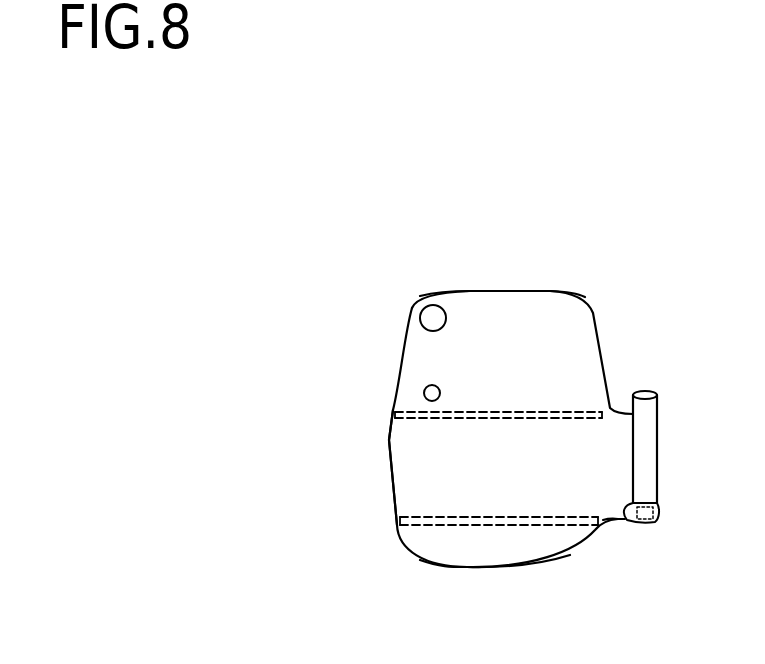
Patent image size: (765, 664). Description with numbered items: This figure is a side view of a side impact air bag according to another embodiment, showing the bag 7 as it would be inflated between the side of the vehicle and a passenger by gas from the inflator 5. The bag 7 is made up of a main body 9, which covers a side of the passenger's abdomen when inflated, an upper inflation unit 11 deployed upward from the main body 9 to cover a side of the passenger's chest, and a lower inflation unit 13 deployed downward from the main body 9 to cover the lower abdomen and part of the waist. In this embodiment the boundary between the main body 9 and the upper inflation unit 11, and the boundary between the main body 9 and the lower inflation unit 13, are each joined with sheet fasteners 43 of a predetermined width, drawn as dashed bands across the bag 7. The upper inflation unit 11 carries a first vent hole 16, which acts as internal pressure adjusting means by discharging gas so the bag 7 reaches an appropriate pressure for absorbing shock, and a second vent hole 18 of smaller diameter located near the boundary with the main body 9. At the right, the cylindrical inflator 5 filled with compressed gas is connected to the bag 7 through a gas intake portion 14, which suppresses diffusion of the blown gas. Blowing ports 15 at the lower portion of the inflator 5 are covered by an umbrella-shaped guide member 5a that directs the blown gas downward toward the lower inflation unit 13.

The bag 7 is at (382, 510).
The main body 9 is at (422, 453).
The upper inflation unit 11 is at (497, 307).
The lower inflation unit 13 is at (497, 550).
The first vent hole 16 is at (432, 315).
The second vent hole 18 is at (428, 390).
The sheet fasteners 43 is at (545, 412).
The inflator 5 is at (643, 400).
The guide member 5a is at (655, 506).
The blowing ports 15 is at (655, 522).
The gas intake portion 14 is at (620, 517).